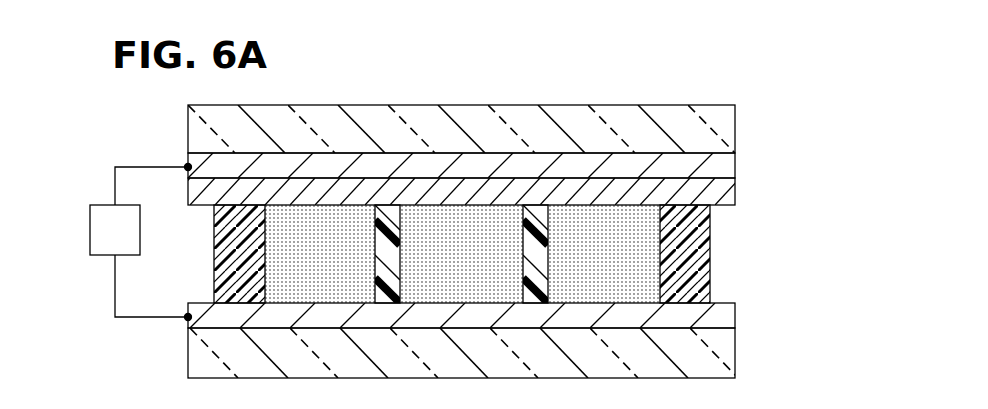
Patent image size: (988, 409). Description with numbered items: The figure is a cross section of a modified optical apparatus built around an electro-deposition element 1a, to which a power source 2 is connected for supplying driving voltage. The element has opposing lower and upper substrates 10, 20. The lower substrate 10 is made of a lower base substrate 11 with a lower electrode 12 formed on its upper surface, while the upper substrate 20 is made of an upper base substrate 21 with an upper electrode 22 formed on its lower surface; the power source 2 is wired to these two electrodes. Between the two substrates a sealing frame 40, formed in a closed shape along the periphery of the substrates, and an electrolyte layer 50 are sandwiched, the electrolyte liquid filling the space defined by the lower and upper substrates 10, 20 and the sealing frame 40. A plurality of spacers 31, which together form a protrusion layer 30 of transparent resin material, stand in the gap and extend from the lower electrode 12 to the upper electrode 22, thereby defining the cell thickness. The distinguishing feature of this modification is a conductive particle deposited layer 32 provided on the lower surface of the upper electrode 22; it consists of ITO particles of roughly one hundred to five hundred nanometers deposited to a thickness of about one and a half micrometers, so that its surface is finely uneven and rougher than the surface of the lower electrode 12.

The electro-deposition element 1a is at (529, 229).
The power source 2 is at (113, 242).
The lower substrate 10 is at (529, 335).
The lower base substrate 11 is at (496, 353).
The lower electrode 12 is at (496, 310).
The upper substrate 20 is at (529, 141).
The upper base substrate 21 is at (496, 129).
The upper electrode 22 is at (496, 160).
The particle deposited layer 32 is at (496, 186).
The protrusion layer 30 is at (538, 213).
The spacers 31 is at (465, 181).
The sealing frame 40 is at (509, 254).
The electrolyte layer 50 is at (534, 254).